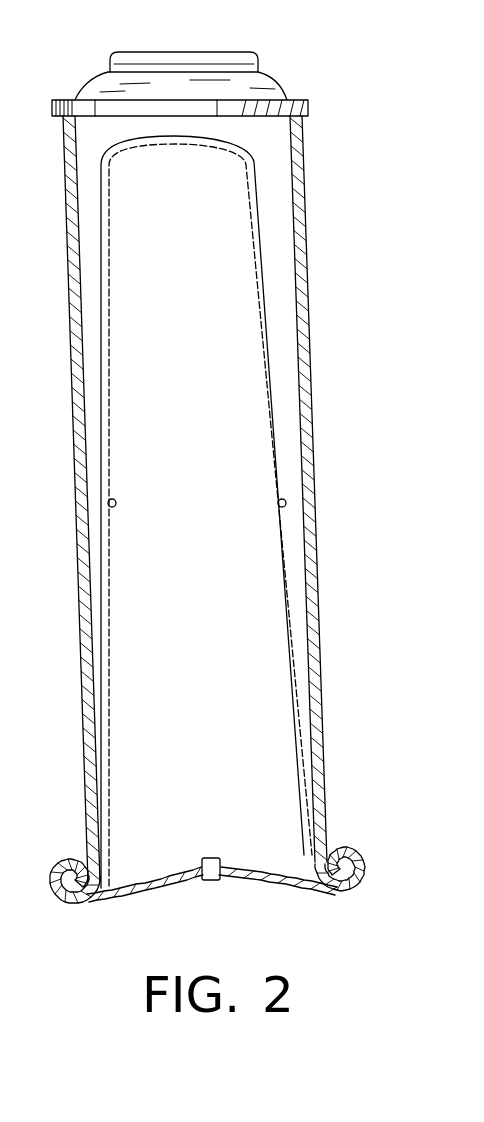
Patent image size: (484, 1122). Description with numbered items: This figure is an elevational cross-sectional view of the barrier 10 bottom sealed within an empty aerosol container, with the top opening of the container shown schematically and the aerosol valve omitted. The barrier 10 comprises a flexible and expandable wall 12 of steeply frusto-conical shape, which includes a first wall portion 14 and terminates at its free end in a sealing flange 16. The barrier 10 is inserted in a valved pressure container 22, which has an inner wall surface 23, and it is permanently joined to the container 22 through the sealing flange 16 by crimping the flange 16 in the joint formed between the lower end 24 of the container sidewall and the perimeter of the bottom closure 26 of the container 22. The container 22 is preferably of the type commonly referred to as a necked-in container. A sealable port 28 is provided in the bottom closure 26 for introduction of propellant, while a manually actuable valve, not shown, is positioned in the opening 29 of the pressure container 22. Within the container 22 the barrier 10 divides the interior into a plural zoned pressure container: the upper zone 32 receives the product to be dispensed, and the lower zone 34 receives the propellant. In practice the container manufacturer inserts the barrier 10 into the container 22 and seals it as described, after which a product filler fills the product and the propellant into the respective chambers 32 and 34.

The barrier 10 is at (258, 554).
The flexible and expandable wall 12 is at (100, 619).
The first wall portion 14 is at (260, 261).
The sealing flange 16 is at (297, 668).
The valved pressure container 22 is at (341, 407).
The inner wall surface 23 is at (85, 437).
The lower end of the sidewall 24 is at (348, 840).
The bottom closure 26 is at (368, 858).
The sealable port 28 is at (215, 882).
The opening 29 is at (236, 52).
The upper zone 32 is at (280, 168).
The lower zone 34 is at (192, 497).